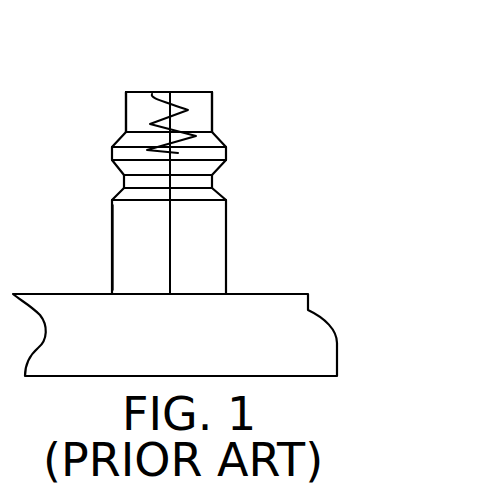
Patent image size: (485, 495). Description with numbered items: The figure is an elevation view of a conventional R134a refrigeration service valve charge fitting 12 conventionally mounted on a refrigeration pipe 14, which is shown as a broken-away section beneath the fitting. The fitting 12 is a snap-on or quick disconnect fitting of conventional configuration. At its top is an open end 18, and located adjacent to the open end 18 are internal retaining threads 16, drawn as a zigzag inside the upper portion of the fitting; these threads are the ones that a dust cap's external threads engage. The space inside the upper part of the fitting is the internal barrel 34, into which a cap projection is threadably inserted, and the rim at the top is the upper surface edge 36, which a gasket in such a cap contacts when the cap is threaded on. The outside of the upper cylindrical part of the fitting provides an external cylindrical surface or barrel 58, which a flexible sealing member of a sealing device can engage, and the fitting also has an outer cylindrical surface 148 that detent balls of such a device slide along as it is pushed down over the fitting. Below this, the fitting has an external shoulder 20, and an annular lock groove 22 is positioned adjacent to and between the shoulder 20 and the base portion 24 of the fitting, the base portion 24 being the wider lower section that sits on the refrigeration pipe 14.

The service valve charge fitting 12 is at (226, 220).
The refrigeration pipe 14 is at (310, 310).
The internal retaining threads 16 is at (190, 107).
The open end 18 is at (196, 92).
The external shoulder 20 is at (124, 133).
The annular lock groove 22 is at (214, 180).
The base portion 24 is at (132, 243).
The internal barrel 34 is at (207, 108).
The upper surface edge 36 is at (128, 92).
The external cylindrical surface or barrel 58 is at (126, 97).
The outer cylindrical surface 148 is at (228, 152).